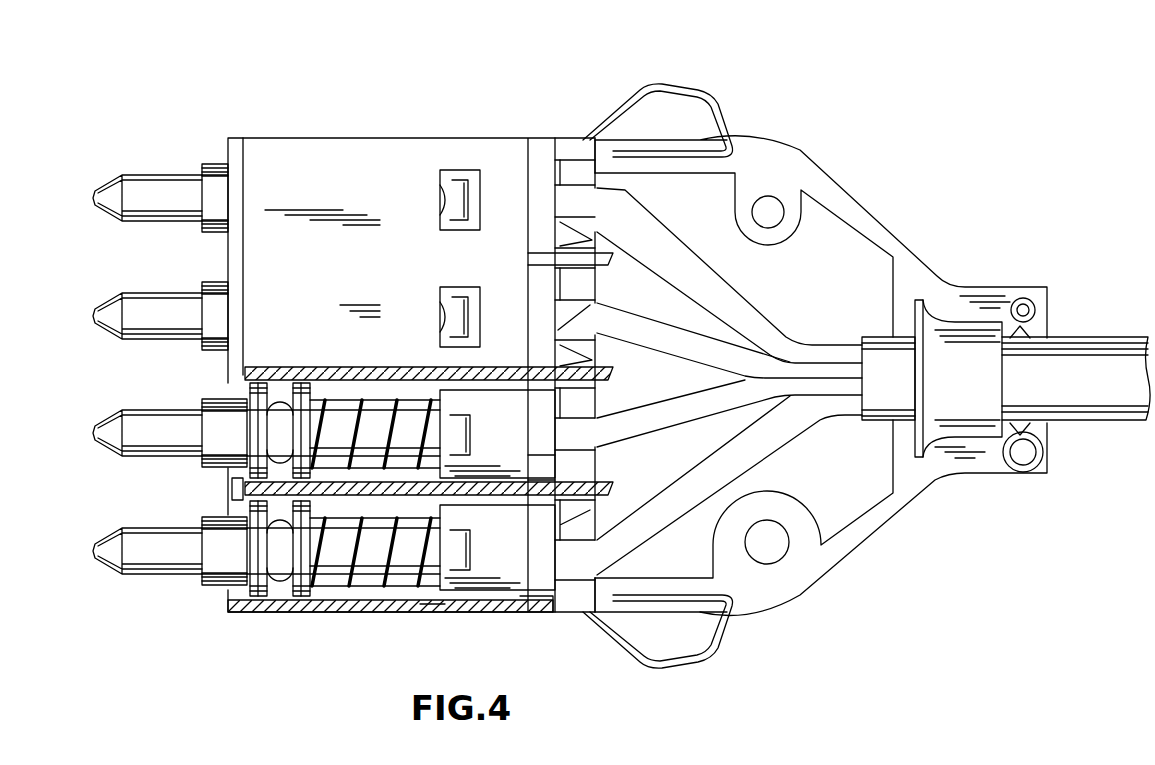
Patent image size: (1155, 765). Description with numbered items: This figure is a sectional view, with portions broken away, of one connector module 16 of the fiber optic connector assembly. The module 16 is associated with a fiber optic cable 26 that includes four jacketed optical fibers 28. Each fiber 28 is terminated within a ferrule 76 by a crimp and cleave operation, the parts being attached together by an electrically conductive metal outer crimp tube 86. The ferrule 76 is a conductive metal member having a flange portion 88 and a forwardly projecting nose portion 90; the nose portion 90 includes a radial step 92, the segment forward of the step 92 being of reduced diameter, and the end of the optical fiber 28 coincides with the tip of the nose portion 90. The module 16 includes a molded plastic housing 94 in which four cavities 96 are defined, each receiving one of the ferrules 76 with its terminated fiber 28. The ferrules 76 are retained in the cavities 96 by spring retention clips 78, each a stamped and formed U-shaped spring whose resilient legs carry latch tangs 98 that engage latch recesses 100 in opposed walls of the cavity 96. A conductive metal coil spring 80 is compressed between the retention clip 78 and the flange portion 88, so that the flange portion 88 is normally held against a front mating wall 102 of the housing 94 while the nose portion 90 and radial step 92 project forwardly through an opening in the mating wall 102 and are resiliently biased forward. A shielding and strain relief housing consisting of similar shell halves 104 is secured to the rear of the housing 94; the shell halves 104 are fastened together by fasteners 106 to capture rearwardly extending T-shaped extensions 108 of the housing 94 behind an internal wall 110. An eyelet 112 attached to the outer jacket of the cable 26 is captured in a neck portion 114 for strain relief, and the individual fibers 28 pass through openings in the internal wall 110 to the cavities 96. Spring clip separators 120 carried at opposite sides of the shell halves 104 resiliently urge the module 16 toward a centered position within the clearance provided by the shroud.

The connector module 16 is at (890, 66).
The fiber optic cable 26 is at (1097, 408).
The optical fibers 28 is at (735, 357).
The ferrule 76 is at (218, 204).
The spring retention clip 78 is at (547, 330).
The coil spring 80 is at (433, 428).
The outer crimp tube 86 is at (428, 395).
The flange portion 88 is at (320, 368).
The nose portion 90 is at (130, 190).
The radial step 92 is at (197, 183).
The housing 94 is at (347, 152).
The cavities 96 is at (553, 470).
The latch tangs 98 is at (467, 180).
The latch recesses 100 is at (442, 203).
The front mating wall 102 is at (228, 252).
The shell halves 104 is at (883, 522).
The fasteners 106 is at (768, 212).
The T-shaped extensions 108 is at (613, 260).
The internal wall 110 is at (577, 240).
The eyelet 112 is at (950, 353).
The neck portion 114 is at (958, 455).
The spring clip separators 120 is at (678, 88).